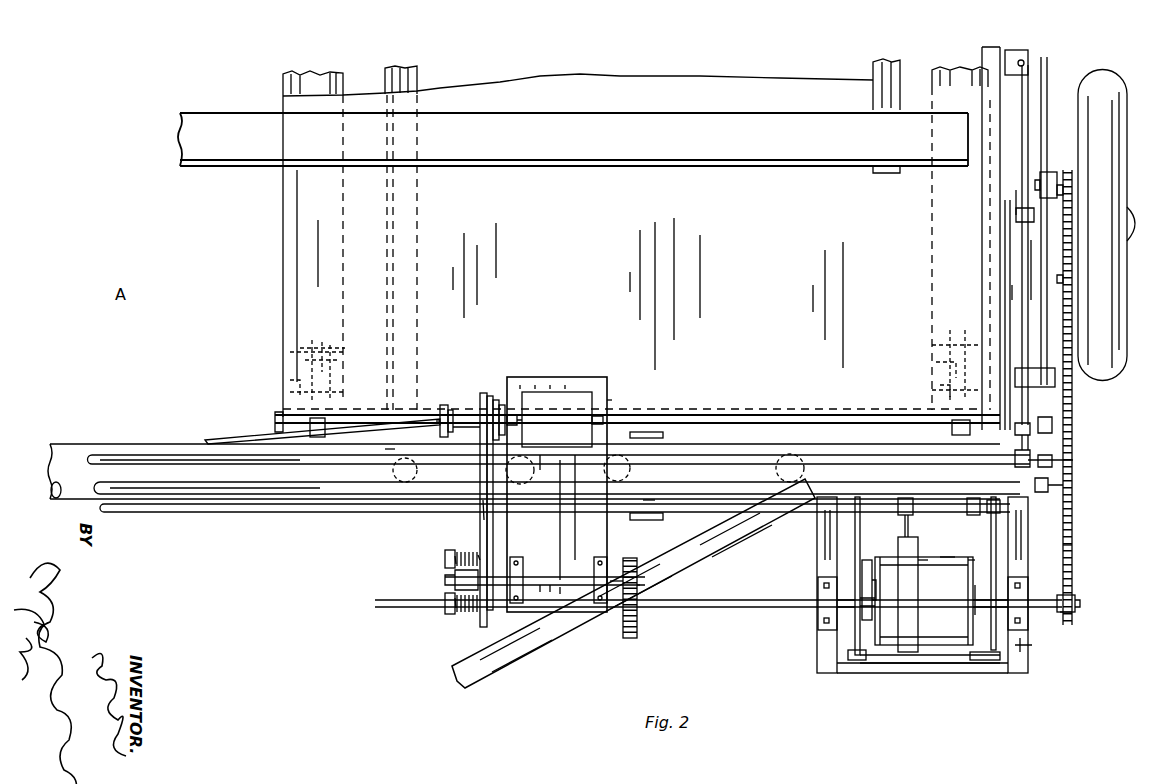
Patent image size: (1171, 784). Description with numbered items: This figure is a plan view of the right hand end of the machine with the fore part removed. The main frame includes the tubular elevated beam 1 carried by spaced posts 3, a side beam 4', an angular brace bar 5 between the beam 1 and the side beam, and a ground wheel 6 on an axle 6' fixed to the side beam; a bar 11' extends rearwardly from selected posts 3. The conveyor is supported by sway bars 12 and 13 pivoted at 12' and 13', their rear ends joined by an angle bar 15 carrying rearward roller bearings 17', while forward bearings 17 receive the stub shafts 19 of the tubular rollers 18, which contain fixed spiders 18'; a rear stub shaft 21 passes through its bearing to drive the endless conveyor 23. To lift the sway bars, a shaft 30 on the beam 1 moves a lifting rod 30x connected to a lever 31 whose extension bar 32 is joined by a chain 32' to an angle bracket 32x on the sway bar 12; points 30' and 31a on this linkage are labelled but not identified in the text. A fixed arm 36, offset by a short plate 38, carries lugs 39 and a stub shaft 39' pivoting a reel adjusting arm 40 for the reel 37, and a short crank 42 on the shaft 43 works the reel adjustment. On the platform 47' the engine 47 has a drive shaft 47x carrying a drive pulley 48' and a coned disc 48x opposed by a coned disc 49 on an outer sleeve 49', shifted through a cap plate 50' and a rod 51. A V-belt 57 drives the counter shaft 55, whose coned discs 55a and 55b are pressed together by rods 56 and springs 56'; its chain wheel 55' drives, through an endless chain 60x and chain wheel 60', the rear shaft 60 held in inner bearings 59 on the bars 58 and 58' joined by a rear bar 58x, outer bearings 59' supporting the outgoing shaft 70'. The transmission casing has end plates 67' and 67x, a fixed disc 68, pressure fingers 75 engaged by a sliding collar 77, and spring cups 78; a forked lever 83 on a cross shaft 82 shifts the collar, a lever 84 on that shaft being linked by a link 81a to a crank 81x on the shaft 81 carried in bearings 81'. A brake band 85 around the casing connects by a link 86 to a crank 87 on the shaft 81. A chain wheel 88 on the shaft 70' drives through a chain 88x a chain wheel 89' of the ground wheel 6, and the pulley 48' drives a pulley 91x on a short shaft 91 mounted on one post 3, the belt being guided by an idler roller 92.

The main elevated beam 1 is at (74, 446).
The posts 3 is at (790, 455).
The side beam 4' is at (986, 223).
The brace bar 5 is at (1013, 292).
The ground wheel 6 is at (1102, 209).
The axle 6' is at (1134, 214).
The bar 11' is at (633, 583).
The sway bar 12 is at (985, 224).
The pivotal connection 12' is at (1059, 445).
The sway bar 13 is at (415, 72).
The pivotal connection 13' is at (361, 465).
The angle bar 15 is at (724, 413).
The forward roller bearing 17 is at (920, 408).
The rearward roller bearing 17' is at (290, 477).
The roller 18 is at (609, 216).
The spider 18' is at (595, 363).
The stub shaft 19 is at (320, 345).
The stub shaft 21 is at (935, 368).
The endless conveyor 23 is at (283, 224).
The shaft 30 is at (559, 440).
The rod hook 30' is at (1064, 442).
The lifting rod 30x is at (1030, 262).
The lever 31 is at (1021, 168).
The bar 31a is at (1006, 238).
The forward extension bar 32 is at (982, 245).
The chain 32' is at (1044, 47).
The angle bracket 32x is at (1016, 50).
The fixed arm 36 is at (1073, 322).
The reel 37 is at (692, 168).
The short plate 38 is at (1015, 378).
The upstanding lug 39 is at (1071, 184).
The stub shaft 39' is at (1085, 196).
The reel adjusting arm 40 is at (1048, 72).
The short crank 42 is at (1050, 486).
The shaft 43 is at (160, 513).
The internal combustion engine 47 is at (555, 419).
The elevated platform 47' is at (557, 475).
The drive shaft 47x is at (608, 400).
The drive pulley 48' is at (506, 397).
The coned disc 48x is at (484, 393).
The coned disc 49 is at (460, 392).
The outer sleeve 49' is at (442, 401).
The cap plate 50' is at (419, 394).
The rod 51 is at (238, 438).
The counter shaft 55 is at (527, 573).
The chain wheel 55' is at (645, 578).
The coned disc 55a is at (510, 588).
The coned disc 55b is at (478, 555).
The fixed rod 56 is at (438, 581).
The compression spring 56' is at (442, 587).
The V-belt 57 is at (489, 522).
The inner bar 58 is at (908, 585).
The outer bar 58' is at (1042, 642).
The rear bar 58x is at (905, 673).
The inner bearing 59 is at (806, 603).
The outer bearing 59' is at (1032, 590).
The rear shaft 60 is at (718, 601).
The chain wheel 60' is at (653, 620).
The endless chain 60x is at (638, 606).
The end plate 67' is at (1012, 537).
The end plate 67x is at (870, 560).
The fixed disc 68 is at (950, 557).
The outgoing shaft 70' is at (1083, 588).
The pressure finger 75 is at (907, 594).
The collar 77 is at (836, 606).
The thimble 78 is at (850, 657).
The shaft 81 is at (557, 510).
The bearing 81' is at (966, 514).
The link 81a is at (992, 662).
The crank 81x is at (996, 645).
The cross shaft 82 is at (855, 540).
The forked lever 83 is at (862, 596).
The lever 84 is at (888, 664).
The brake band 85 is at (915, 606).
The link 86 is at (922, 561).
The crank 87 is at (905, 497).
The chain wheel 88 is at (1077, 606).
The endless chain 88x is at (1073, 548).
The chain wheel 89' is at (1082, 271).
The short shaft 91 is at (646, 459).
The pulley 91x is at (646, 505).
The idler roller 92 is at (648, 521).